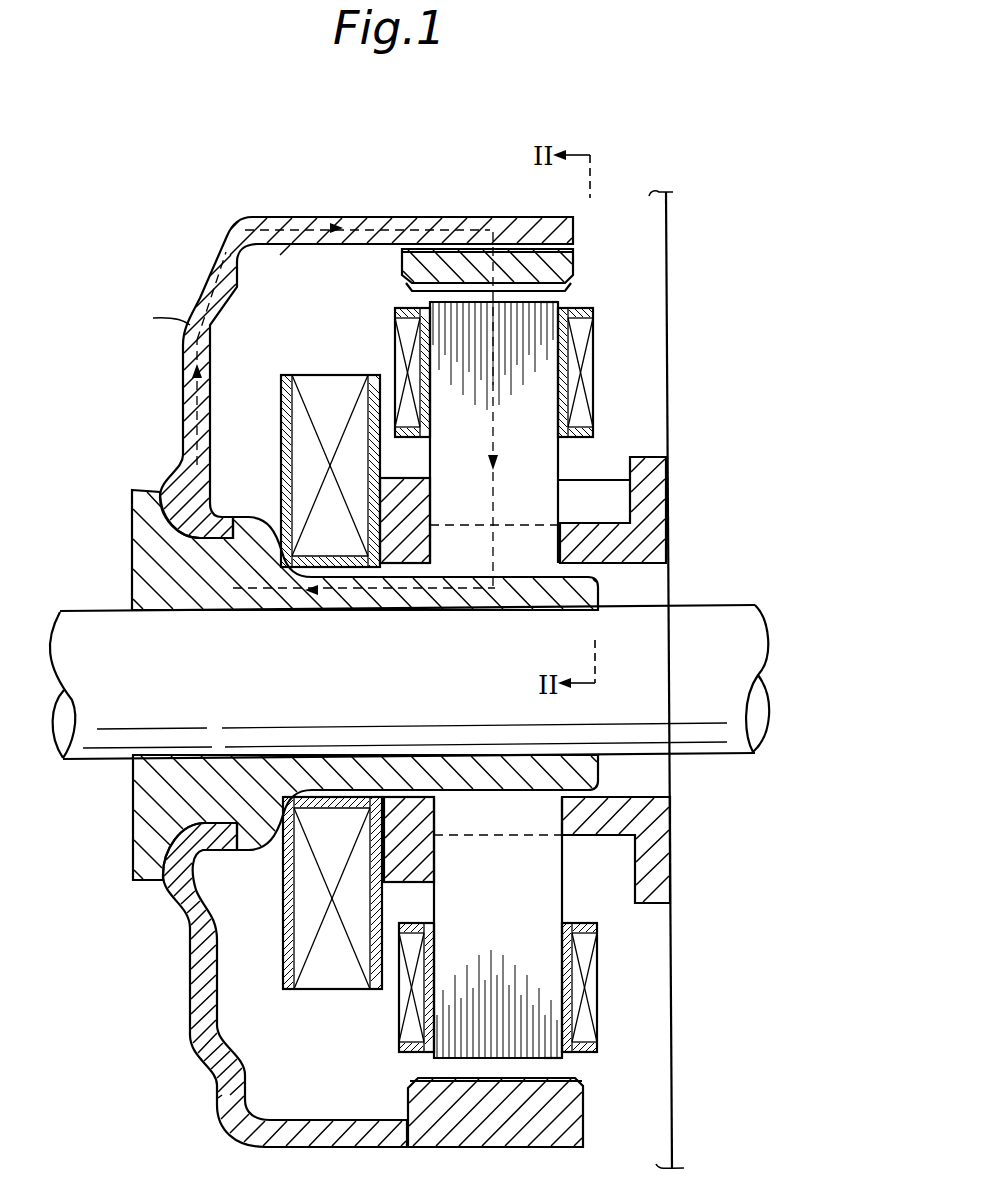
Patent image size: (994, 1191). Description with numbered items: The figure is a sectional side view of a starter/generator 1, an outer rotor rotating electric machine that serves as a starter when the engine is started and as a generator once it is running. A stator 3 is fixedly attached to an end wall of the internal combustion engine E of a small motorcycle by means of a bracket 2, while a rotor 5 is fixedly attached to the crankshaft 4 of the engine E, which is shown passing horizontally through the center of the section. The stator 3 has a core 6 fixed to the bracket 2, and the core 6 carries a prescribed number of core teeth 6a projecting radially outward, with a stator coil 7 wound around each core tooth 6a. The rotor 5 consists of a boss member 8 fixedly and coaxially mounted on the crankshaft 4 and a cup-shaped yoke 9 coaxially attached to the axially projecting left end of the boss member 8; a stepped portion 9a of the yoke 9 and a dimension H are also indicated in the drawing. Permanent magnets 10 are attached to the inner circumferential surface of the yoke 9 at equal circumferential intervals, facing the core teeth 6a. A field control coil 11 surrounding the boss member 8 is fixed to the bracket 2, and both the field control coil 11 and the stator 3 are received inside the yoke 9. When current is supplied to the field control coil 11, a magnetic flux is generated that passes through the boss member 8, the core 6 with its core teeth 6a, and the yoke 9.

The starter/generator 1 is at (330, 655).
The bracket 2 is at (660, 513).
The stator 3 is at (495, 645).
The crankshaft 4 is at (650, 606).
The rotor 5 is at (330, 682).
The core 6 is at (560, 480).
The core tooth 6a is at (562, 305).
The stator coil 7 is at (595, 377).
The boss member 8 is at (345, 665).
The yoke 9 is at (183, 408).
The stepped portion of flange 9a is at (407, 283).
The permanent magnet 10 is at (434, 246).
The field control coil 11 is at (322, 376).
The internal combustion engine E is at (661, 233).
The height H is at (153, 318).